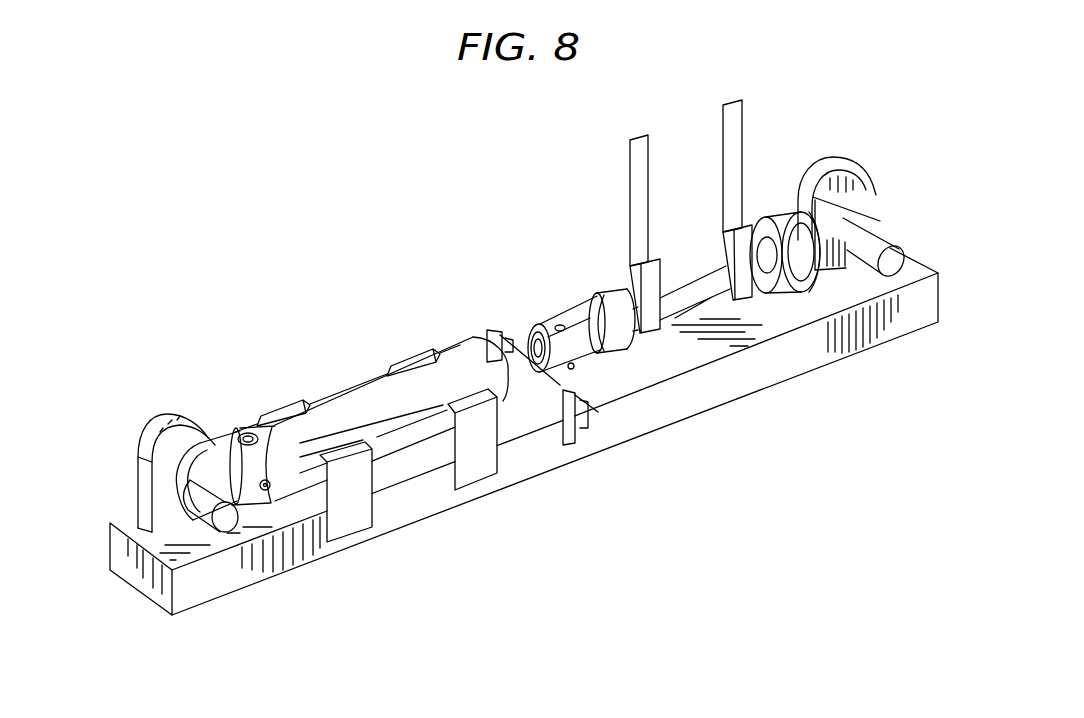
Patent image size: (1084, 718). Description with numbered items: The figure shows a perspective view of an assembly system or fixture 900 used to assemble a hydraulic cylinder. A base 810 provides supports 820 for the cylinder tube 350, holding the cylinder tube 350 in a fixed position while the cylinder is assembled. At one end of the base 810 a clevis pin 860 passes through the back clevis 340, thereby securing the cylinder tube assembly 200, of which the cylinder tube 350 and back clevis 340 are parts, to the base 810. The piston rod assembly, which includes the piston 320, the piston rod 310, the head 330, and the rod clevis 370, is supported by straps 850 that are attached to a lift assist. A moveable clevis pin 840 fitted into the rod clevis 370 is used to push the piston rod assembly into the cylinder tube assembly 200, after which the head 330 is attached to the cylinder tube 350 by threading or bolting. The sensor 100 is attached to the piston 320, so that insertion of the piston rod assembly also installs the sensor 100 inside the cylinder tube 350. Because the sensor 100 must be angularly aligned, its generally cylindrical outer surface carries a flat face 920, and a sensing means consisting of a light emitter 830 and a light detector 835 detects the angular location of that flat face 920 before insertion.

The assembly system or fixture 900 is at (343, 233).
The cylinder tube assembly 200 is at (272, 350).
The sensor 100 is at (553, 290).
The cylinder tube 350 is at (383, 397).
The clevis pin 860 is at (143, 430).
The back clevis 340 is at (190, 483).
The base 810 is at (217, 584).
The supports 820 is at (337, 521).
The light detector 835 is at (492, 330).
The light emitter 830 is at (590, 401).
The flat face 920 is at (573, 366).
The piston 320 is at (617, 337).
The piston rod 310 is at (687, 287).
The straps 850 is at (630, 155).
The rod clevis 370 is at (857, 207).
The moveable clevis pin 840 is at (877, 240).
The head 330 is at (818, 268).